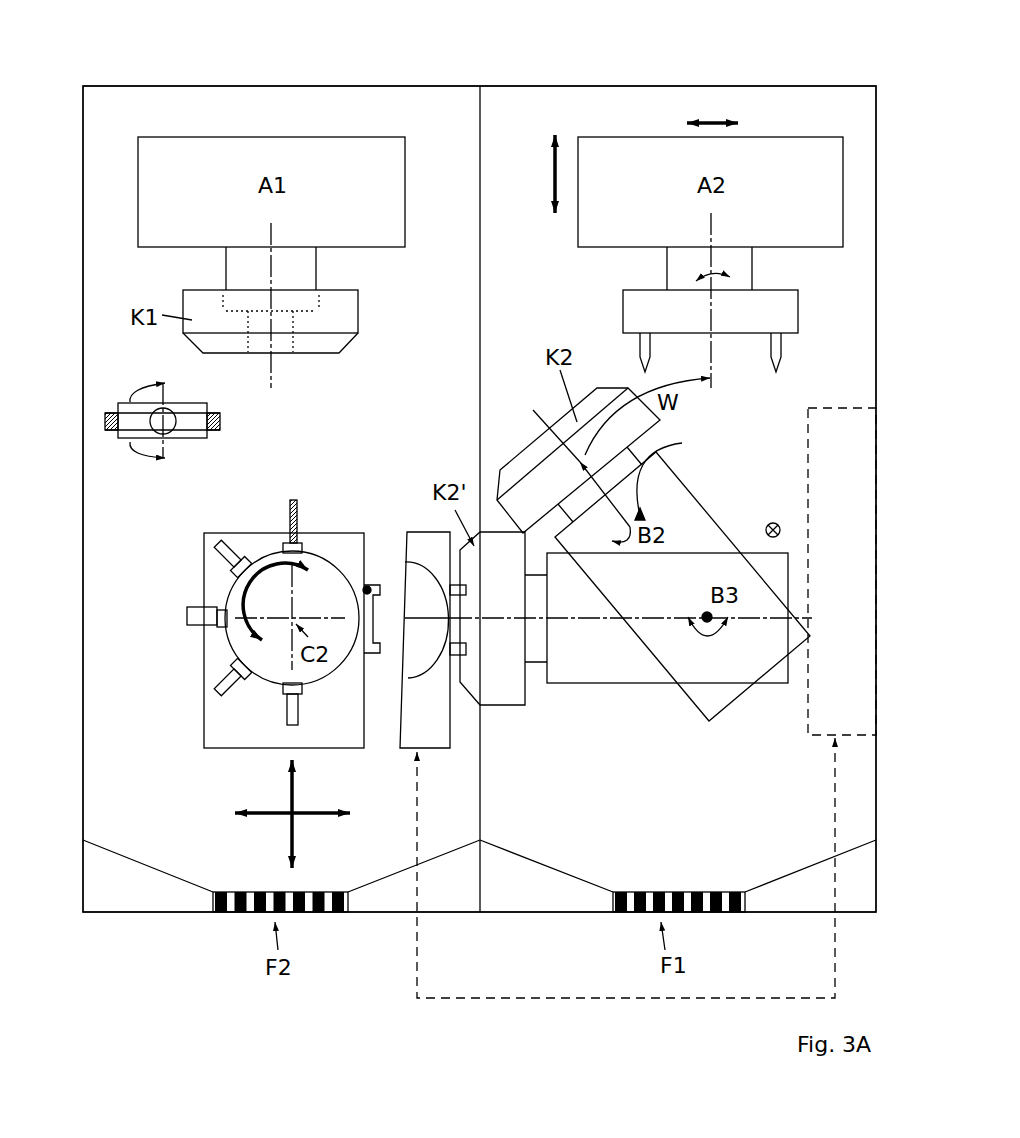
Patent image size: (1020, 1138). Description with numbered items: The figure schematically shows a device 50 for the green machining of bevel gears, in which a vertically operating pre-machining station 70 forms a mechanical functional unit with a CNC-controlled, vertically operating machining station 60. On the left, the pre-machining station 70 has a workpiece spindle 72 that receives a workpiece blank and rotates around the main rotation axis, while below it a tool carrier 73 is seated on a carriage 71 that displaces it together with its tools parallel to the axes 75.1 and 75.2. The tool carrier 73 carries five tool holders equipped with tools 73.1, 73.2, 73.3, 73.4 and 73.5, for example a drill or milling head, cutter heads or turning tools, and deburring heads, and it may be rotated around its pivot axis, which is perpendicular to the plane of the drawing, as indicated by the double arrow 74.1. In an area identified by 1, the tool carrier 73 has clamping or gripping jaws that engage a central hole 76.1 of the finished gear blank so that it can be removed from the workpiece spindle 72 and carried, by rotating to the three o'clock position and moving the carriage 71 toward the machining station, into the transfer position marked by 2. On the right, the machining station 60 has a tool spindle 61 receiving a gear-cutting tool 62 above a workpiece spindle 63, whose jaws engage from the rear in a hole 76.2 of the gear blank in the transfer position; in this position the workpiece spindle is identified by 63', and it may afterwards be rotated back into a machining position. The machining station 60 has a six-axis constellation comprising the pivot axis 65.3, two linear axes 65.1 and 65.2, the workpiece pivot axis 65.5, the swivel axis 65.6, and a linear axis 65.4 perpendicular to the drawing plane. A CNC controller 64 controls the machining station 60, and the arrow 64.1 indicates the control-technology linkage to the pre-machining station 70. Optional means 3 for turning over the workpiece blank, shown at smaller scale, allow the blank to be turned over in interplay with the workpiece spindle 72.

The device 50 is at (794, 44).
The machining station 60 is at (845, 86).
The pre-machining station 70 is at (100, 84).
The workpiece spindle 72 is at (233, 272).
The hole 76.1 is at (293, 345).
The hole 76.2 is at (315, 303).
The means for turning over the workpiece blank 3 is at (113, 441).
The carriage 71 is at (250, 703).
The tool carrier 73 is at (275, 643).
The tool 73.1 is at (290, 505).
The tool 73.2 is at (222, 548).
The tool 73.3 is at (187, 617).
The tool 73.4 is at (212, 698).
The tool 73.5 is at (295, 717).
The double arrow 74.1 is at (300, 573).
The clamping or gripping jaws 1 is at (369, 586).
The axis 75.1 is at (333, 820).
The axis 75.2 is at (291, 857).
The position of the tool carrier 2 is at (453, 730).
The tool spindle 61 is at (740, 267).
The gear-cutting tool 62 is at (778, 313).
The workpiece spindle 63 is at (682, 586).
The workpiece spindle in transfer position 63' is at (656, 656).
The CNC controller 64 is at (853, 696).
The arrow 64.1 is at (626, 891).
The linear axis 65.1 is at (712, 118).
The linear axis 65.2 is at (556, 132).
The pivot axis 65.3 is at (692, 276).
The linear axis 65.4 is at (770, 523).
The workpiece pivot axis 65.5 is at (684, 474).
The swivel axis 65.6 is at (716, 640).